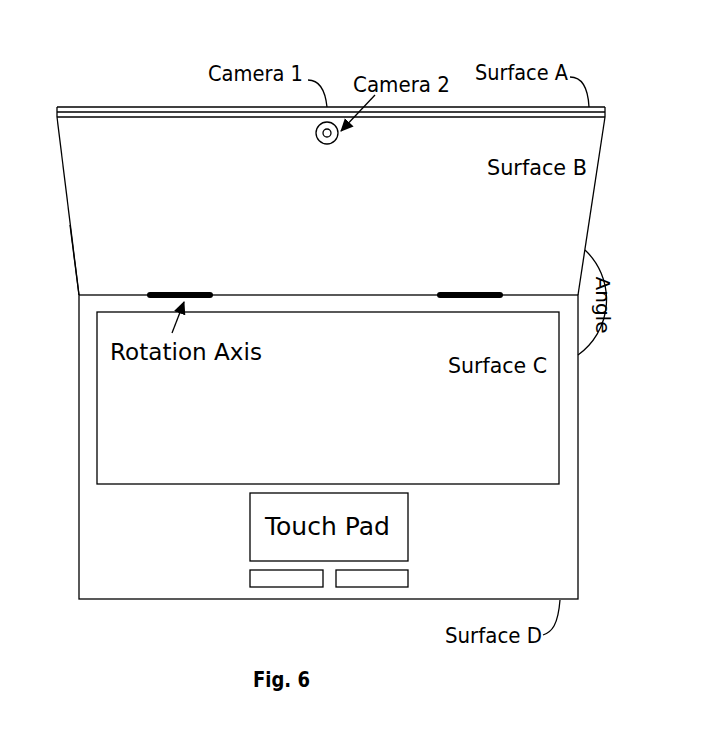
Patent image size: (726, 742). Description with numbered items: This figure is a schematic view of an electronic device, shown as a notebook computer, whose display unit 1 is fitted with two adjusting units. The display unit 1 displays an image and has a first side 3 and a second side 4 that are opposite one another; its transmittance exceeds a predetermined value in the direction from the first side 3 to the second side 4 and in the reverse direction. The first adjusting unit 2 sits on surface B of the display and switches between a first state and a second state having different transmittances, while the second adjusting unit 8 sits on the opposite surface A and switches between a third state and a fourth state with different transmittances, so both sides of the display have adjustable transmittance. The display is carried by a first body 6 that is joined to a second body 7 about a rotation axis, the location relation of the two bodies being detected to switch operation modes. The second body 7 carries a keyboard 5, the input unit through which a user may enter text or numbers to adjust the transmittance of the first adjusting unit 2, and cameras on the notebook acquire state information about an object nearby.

The display unit 1 is at (60, 138).
The first adjusting unit 2 is at (98, 118).
The first side 3 is at (179, 107).
The second side 4 is at (198, 150).
The keyboard 5 is at (328, 398).
The first body 6 is at (77, 251).
The second body 7 is at (80, 436).
The second adjusting unit 8 is at (85, 105).